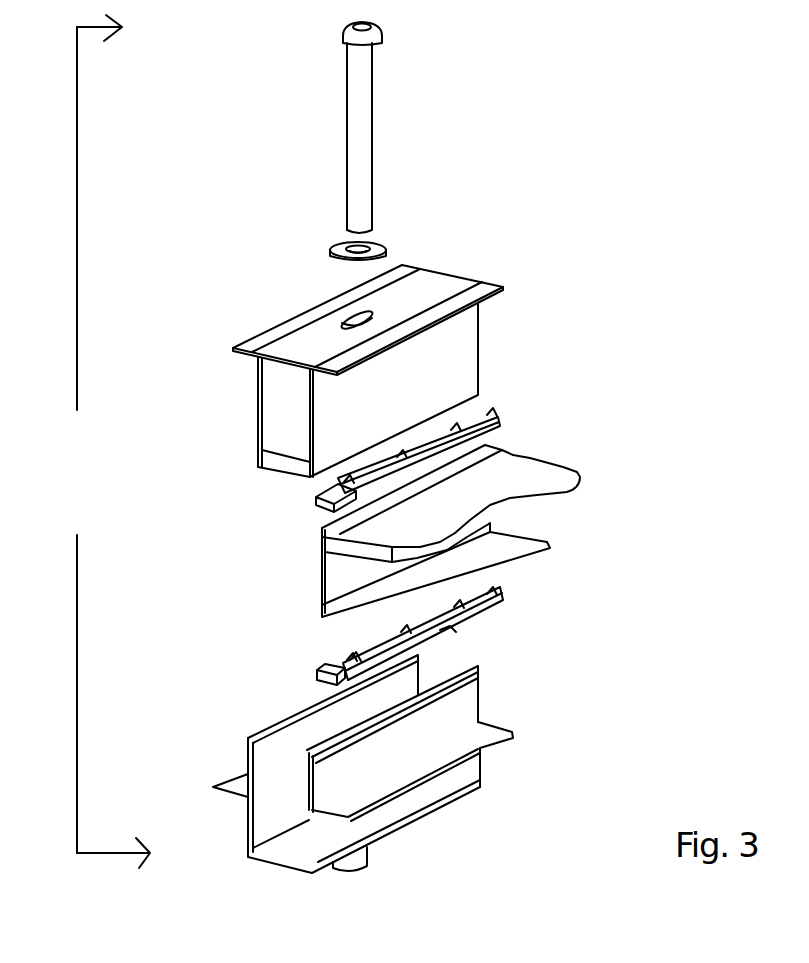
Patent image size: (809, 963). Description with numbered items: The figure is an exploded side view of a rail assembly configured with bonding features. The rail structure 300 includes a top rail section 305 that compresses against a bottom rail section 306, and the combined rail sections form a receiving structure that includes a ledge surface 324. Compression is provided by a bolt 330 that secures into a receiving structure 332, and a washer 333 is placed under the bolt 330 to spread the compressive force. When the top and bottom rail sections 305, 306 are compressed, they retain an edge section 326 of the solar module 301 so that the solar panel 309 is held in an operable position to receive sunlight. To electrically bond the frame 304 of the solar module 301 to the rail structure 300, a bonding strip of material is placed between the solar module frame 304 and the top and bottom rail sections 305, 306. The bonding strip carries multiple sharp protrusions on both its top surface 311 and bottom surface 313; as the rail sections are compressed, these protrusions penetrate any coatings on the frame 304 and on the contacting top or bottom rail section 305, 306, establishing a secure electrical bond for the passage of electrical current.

The rail structure 300 is at (95, 441).
The solar module 301 is at (549, 433).
The frame 304 is at (322, 606).
The top rail section 305 is at (546, 214).
The bottom rail section 306 is at (465, 697).
The solar panel 309 is at (543, 476).
The top surface 311 is at (336, 668).
The bottom surface 313 is at (327, 681).
The ledge surface 324 is at (398, 766).
The edge section 326 is at (319, 571).
The bolt 330 is at (366, 150).
The receiving structure 332 is at (369, 857).
The washer 333 is at (384, 243).